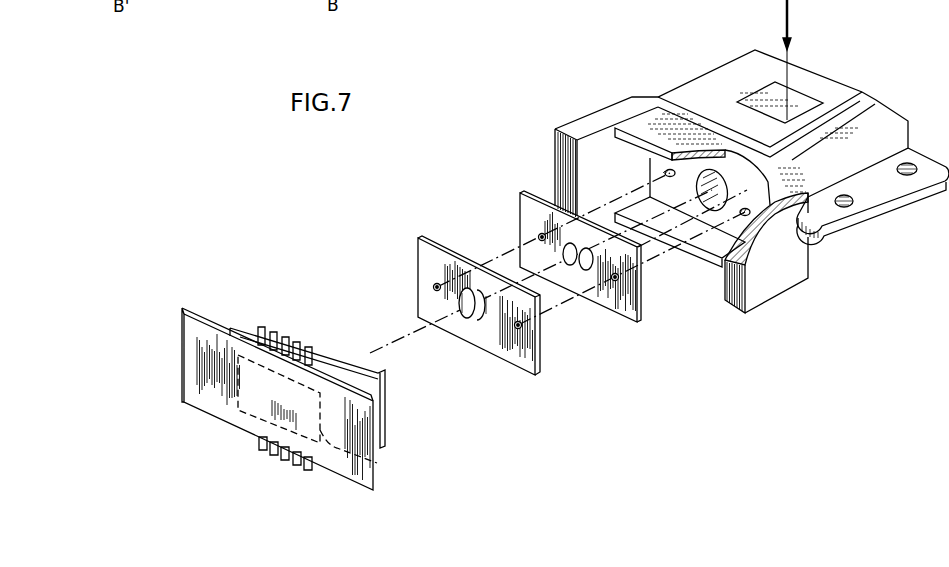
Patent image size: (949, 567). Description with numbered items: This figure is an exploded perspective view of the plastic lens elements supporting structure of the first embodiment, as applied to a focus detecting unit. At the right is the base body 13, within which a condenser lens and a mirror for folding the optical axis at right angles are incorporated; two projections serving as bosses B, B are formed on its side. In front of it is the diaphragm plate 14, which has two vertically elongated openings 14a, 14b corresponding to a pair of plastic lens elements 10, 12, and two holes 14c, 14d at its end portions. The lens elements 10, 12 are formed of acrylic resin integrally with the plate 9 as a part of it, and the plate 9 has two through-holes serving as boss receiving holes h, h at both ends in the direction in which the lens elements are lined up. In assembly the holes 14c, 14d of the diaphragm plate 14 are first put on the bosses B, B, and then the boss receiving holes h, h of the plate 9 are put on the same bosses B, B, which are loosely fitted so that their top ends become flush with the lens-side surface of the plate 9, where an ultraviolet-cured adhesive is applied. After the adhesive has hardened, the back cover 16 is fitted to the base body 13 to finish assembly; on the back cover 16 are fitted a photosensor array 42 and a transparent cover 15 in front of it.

The plate 9 is at (518, 364).
The plastic lens element 10 is at (466, 312).
The plastic lens element 12 is at (483, 320).
The base body 13 is at (783, 290).
The diaphragm plate 14 is at (618, 318).
The vertically elongated opening 14a is at (567, 244).
The vertically elongated opening 14b is at (587, 248).
The hole 14c is at (539, 234).
The hole 14d is at (620, 277).
The transparent cover 15 is at (268, 316).
The back cover 16 is at (222, 414).
The photosensor array 42 is at (378, 459).
The boss receiving hole h is at (434, 285).
The boss B is at (668, 168).